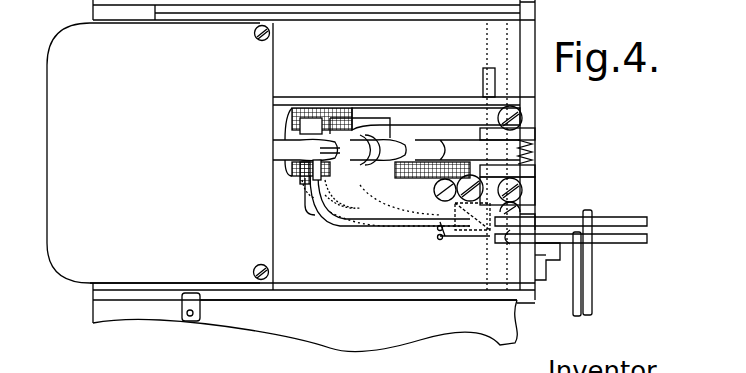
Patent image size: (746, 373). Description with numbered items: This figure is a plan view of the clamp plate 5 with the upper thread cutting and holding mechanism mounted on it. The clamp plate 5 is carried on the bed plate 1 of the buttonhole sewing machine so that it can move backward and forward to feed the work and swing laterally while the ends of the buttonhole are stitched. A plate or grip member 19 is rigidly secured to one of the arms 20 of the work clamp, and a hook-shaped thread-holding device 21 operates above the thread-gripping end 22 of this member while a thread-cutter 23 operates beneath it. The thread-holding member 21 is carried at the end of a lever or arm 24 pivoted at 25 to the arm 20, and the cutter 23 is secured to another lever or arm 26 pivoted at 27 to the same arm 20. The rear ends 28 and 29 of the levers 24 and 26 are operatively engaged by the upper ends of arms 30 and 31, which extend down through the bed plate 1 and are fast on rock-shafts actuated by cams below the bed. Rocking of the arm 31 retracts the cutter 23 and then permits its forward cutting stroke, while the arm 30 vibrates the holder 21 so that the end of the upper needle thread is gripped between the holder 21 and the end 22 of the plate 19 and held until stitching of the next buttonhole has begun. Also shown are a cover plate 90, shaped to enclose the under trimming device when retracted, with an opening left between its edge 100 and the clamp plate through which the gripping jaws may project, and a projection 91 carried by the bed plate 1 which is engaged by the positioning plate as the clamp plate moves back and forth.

The bed plate 1 is at (268, 333).
The clamp plate 5 is at (312, 187).
The plate or grip member 19 is at (350, 197).
The arm 20 is at (437, 110).
The thread-holding device 21 is at (298, 180).
The thread-gripping end 22 is at (303, 189).
The thread-cutter 23 is at (308, 202).
The lever or arm 24 is at (378, 218).
The pivot 25 is at (468, 178).
The lever or arm 26 is at (415, 226).
The pivot 27 is at (437, 210).
The rear end 28 is at (633, 225).
The rear end 29 is at (640, 243).
The arm 30 is at (592, 298).
The arm 31 is at (573, 305).
The cover plate 90 is at (87, 259).
The projection 91 is at (187, 321).
The edge 100 is at (268, 118).